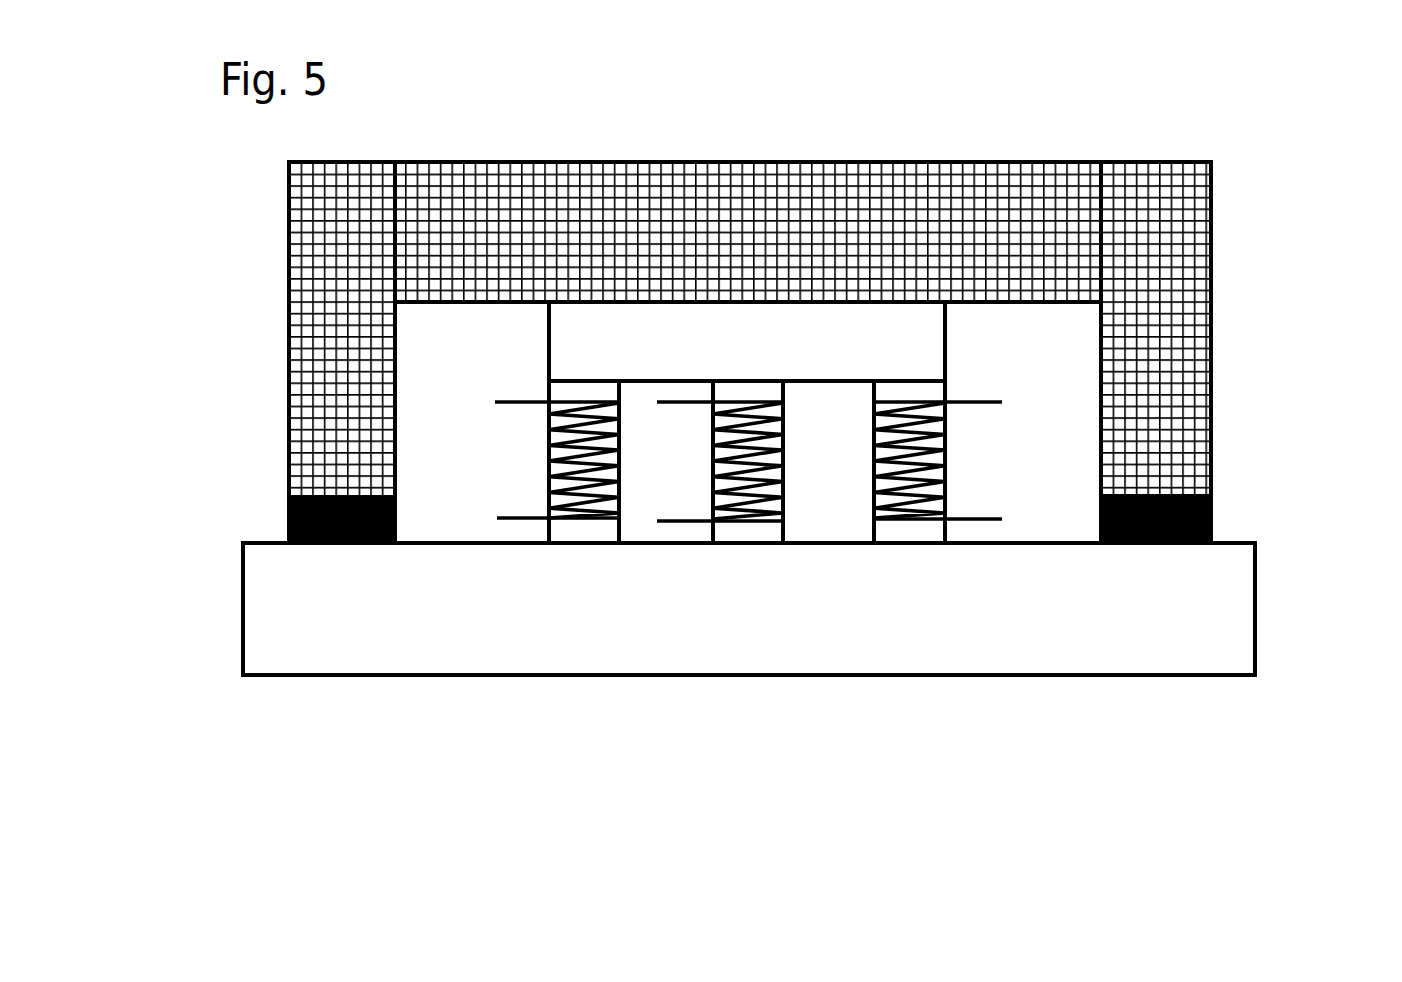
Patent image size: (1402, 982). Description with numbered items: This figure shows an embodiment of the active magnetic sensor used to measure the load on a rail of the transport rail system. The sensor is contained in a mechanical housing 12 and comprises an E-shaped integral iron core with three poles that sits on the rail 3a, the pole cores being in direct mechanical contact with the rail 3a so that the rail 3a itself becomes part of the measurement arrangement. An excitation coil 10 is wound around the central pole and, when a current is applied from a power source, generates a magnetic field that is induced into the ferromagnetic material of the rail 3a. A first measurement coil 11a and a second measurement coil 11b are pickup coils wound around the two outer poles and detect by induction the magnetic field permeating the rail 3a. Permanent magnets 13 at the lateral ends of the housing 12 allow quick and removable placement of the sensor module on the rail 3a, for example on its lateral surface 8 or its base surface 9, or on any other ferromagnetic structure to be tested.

The rail 3a is at (753, 696).
The base surface 9 is at (1105, 618).
The mechanical housing 12 is at (603, 203).
The permanent magnets 13 is at (285, 515).
The lateral surface 8 is at (480, 543).
The first measurement coil 11a is at (589, 532).
The excitation coil 10 is at (746, 532).
The second measurement coil 11b is at (913, 532).